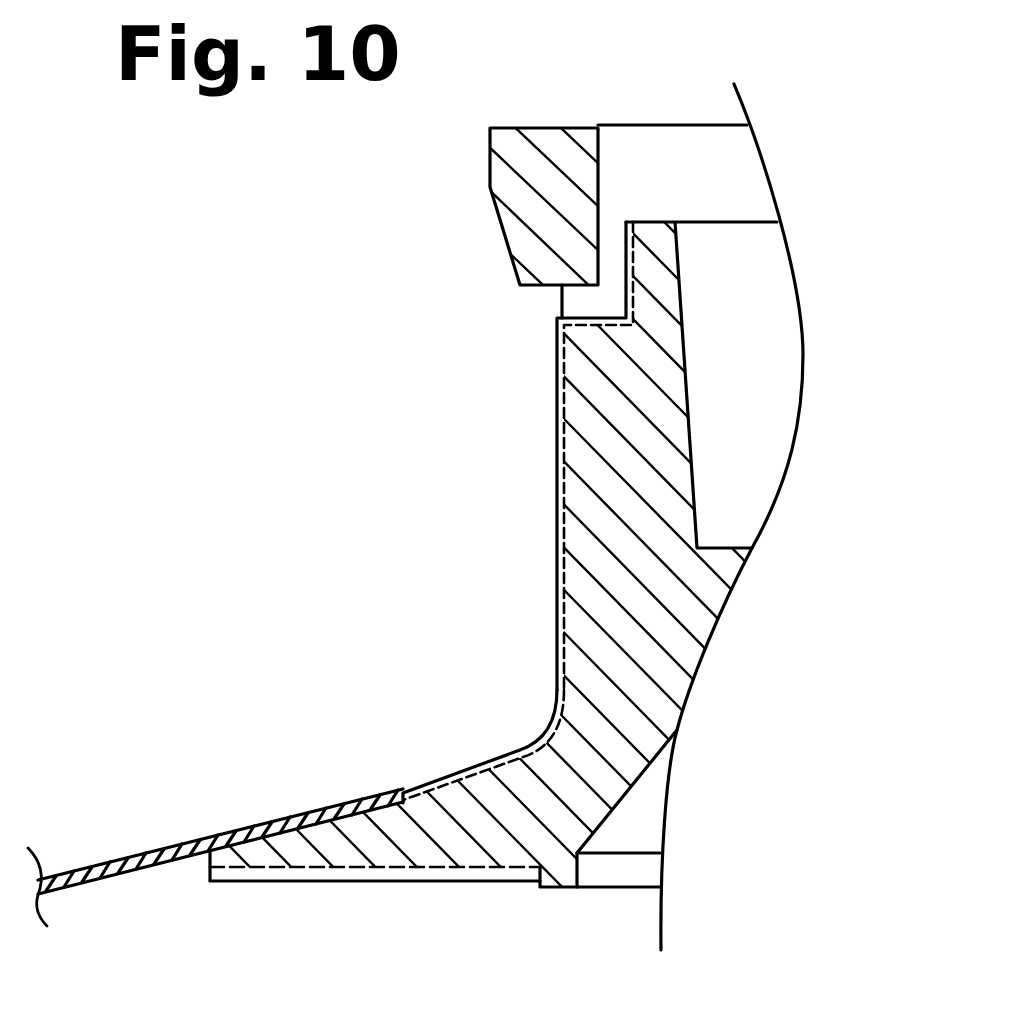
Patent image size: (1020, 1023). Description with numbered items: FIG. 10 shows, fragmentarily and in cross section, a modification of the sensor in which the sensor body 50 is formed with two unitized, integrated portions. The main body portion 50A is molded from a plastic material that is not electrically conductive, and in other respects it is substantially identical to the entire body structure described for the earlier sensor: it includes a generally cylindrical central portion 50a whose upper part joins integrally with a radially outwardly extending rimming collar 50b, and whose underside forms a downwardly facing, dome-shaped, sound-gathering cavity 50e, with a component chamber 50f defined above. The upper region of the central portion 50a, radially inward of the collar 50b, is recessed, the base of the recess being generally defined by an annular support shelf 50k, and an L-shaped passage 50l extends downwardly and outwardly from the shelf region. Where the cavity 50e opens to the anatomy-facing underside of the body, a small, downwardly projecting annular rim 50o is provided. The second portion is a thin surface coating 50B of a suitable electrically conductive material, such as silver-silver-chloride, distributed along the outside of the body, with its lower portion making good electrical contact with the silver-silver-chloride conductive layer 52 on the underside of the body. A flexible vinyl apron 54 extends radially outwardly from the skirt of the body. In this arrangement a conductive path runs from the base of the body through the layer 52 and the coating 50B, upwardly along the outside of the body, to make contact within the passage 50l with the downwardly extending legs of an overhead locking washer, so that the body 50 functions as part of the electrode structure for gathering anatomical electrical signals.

The sensor body 50 is at (347, 643).
The central portion 50a is at (615, 501).
The rimming collar 50b is at (525, 209).
The support shelf 50k is at (660, 220).
The L-shaped passage 50l is at (603, 268).
The component chamber 50f is at (764, 354).
The main body portion 50A is at (719, 633).
The surface coating 50B is at (465, 756).
The sound-gathering cavity 50e is at (783, 859).
The annular rim 50o is at (562, 889).
The conductive layer 52 is at (392, 881).
The flexible vinyl apron 54 is at (172, 833).